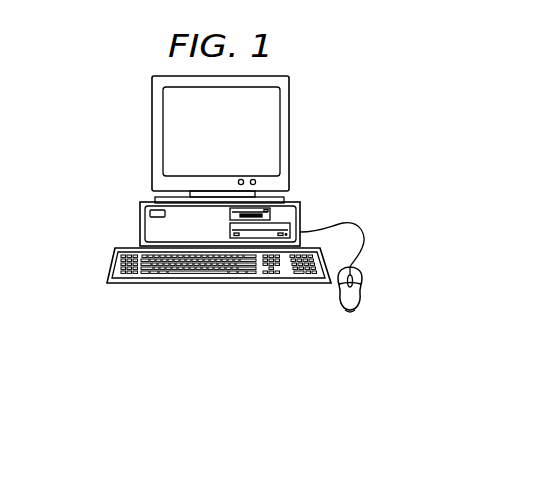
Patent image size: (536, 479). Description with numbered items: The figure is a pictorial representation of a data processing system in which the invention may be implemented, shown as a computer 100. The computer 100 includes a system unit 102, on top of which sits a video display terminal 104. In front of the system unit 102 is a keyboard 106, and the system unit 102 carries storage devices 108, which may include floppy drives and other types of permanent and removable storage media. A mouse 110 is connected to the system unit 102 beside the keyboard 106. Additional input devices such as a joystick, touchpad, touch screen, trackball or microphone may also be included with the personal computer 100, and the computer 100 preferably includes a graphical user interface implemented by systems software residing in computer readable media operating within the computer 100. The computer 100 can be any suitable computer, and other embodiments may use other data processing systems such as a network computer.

The computer 100 is at (97, 116).
The system unit 102 is at (140, 222).
The video display terminal 104 is at (289, 133).
The keyboard 106 is at (133, 285).
The storage devices 108 is at (272, 217).
The mouse 110 is at (350, 313).